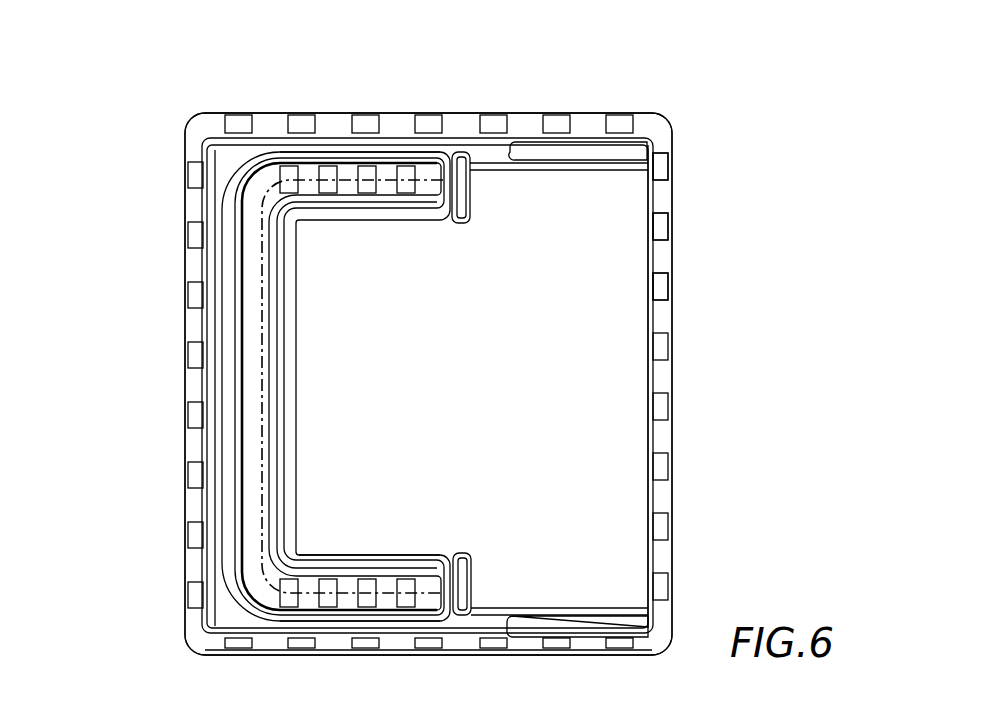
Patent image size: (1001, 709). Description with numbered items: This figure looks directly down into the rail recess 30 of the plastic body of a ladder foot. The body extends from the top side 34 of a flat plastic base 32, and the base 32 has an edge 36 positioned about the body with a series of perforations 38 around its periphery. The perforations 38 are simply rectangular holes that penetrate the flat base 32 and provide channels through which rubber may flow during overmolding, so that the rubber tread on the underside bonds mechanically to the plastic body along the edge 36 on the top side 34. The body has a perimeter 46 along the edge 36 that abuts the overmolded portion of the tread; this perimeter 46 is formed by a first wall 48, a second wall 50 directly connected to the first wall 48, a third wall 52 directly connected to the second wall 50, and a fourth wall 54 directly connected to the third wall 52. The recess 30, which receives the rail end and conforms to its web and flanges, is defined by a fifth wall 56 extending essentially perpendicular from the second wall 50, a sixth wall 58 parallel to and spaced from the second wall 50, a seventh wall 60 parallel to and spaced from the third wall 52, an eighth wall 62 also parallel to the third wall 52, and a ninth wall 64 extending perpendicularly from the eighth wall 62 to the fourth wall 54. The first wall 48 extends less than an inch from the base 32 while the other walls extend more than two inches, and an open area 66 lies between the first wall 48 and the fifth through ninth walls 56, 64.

The recess 30 is at (229, 185).
The plastic base 32 is at (169, 209).
The top side 34 is at (612, 465).
The edge 36 is at (275, 113).
The perforations 38 is at (639, 287).
The perimeter 46 is at (478, 118).
The first wall 48 is at (660, 325).
The second wall 50 is at (373, 152).
The third wall 52 is at (240, 265).
The fourth wall 54 is at (385, 625).
The fifth wall 56 is at (465, 190).
The sixth wall 58 is at (373, 205).
The seventh wall 60 is at (273, 270).
The eighth wall 62 is at (362, 555).
The ninth wall 64 is at (470, 580).
The open area 66 is at (436, 409).